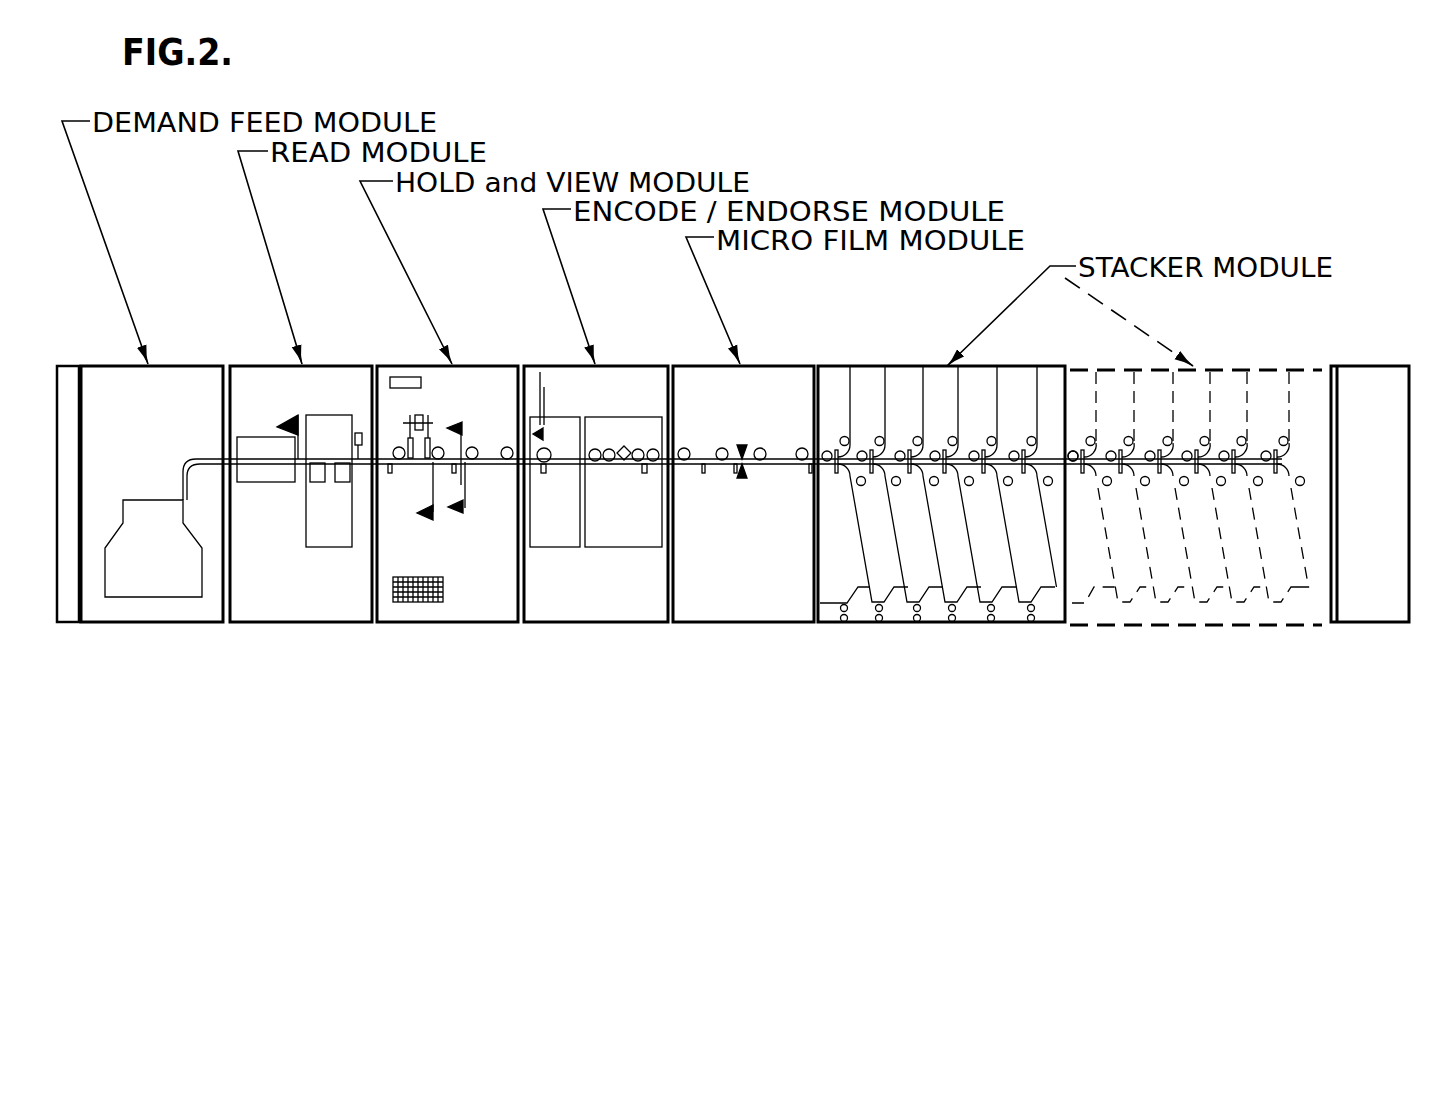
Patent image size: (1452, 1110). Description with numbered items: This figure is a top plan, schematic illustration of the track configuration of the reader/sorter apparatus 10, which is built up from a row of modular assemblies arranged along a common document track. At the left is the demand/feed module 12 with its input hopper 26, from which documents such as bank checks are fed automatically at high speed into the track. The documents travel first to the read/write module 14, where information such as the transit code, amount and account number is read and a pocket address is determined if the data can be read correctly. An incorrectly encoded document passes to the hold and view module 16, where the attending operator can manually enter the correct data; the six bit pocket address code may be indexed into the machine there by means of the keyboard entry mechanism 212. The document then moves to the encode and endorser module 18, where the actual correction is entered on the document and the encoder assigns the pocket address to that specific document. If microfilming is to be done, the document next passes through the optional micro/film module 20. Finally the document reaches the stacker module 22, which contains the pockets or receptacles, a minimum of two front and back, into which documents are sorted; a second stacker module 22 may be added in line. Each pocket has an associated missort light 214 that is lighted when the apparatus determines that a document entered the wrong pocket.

The reader/sorter apparatus 10 is at (120, 694).
The demand/feed module 12 is at (180, 619).
The read/write module 14 is at (328, 619).
The hold and view module 16 is at (477, 619).
The encode and endorser module 18 is at (617, 619).
The micro/film module 20 is at (773, 619).
The stacker module 22 is at (925, 617).
The input hopper 26 is at (157, 568).
The keyboard entry mechanism 212 is at (443, 577).
The missort light 214 is at (834, 620).